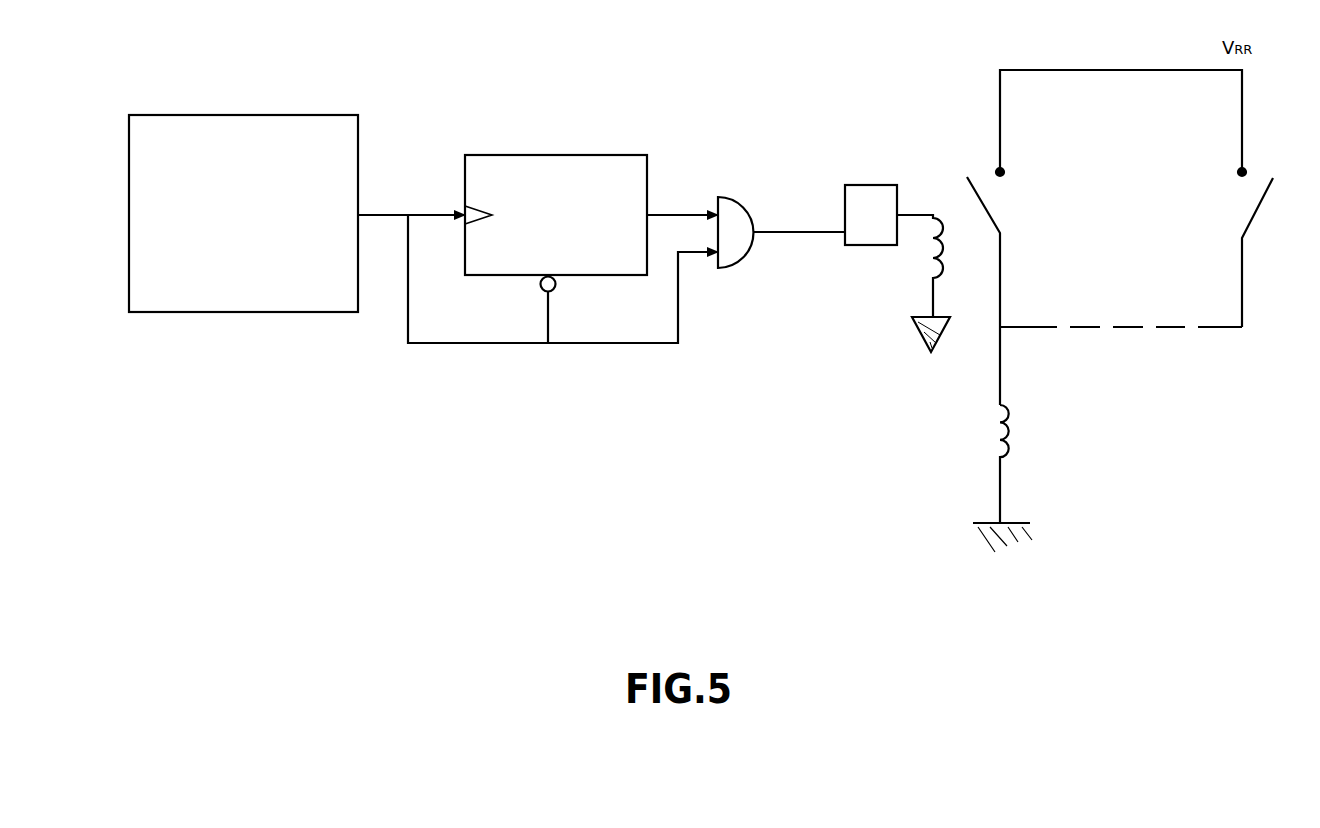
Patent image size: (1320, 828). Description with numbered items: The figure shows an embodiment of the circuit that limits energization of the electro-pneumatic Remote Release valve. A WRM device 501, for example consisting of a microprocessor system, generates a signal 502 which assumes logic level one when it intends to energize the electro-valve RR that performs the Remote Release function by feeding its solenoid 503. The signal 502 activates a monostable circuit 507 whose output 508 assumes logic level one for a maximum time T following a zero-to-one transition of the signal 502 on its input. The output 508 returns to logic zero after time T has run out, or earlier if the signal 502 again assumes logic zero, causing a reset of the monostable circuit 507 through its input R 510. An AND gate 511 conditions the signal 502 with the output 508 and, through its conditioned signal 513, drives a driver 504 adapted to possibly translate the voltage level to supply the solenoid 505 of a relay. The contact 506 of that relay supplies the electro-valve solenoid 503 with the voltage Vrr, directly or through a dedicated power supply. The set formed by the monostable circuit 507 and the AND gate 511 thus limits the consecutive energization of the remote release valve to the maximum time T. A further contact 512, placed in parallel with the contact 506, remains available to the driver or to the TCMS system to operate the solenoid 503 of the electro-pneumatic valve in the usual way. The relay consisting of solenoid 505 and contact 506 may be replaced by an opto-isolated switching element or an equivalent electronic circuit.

The WRM device 501 is at (148, 298).
The signal 502 is at (383, 208).
The solenoid of the electro-valve RR 503 is at (1017, 437).
The driver 504 is at (878, 195).
The solenoid of the relay 505 is at (925, 268).
The contact of the relay 506 is at (990, 212).
The monostable circuit 507 is at (597, 186).
The output of the monostable circuit 508 is at (674, 208).
The reset input R 510 is at (558, 286).
The AND gate 511 is at (731, 252).
The parallel contact 512 is at (1250, 217).
The conditioned signal 513 is at (799, 228).